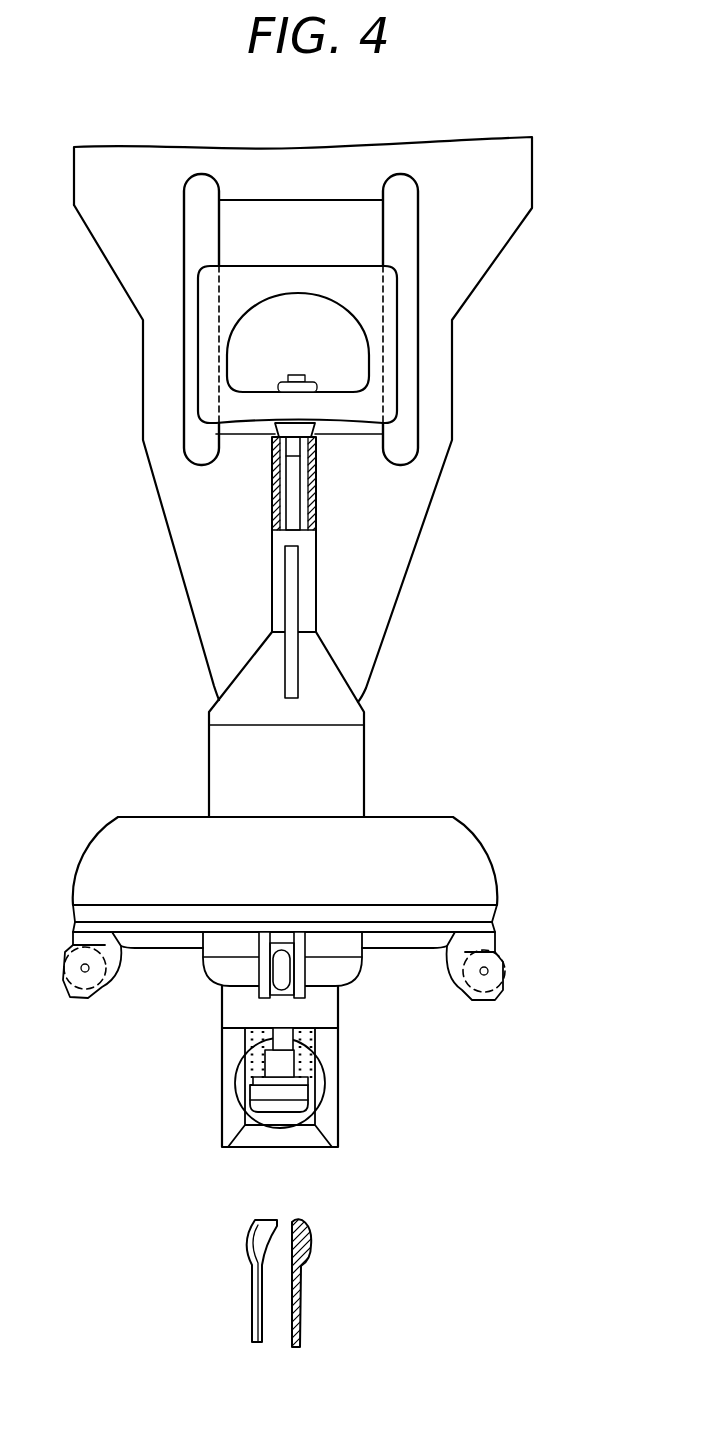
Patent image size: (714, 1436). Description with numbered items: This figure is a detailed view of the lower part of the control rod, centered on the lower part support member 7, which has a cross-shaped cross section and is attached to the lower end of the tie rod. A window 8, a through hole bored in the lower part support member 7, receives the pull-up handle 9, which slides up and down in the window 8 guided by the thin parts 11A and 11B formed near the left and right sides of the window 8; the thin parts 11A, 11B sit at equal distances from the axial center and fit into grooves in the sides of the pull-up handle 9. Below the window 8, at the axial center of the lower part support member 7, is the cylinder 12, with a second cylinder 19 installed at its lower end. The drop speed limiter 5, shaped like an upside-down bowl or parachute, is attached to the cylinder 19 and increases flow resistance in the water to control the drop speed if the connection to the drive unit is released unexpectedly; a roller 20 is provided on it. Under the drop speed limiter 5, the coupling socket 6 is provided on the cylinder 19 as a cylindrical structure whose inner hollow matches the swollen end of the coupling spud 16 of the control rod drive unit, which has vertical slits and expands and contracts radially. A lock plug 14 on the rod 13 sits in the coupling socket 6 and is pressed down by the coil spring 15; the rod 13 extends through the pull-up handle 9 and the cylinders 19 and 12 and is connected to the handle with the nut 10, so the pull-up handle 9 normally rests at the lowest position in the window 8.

The drop speed limiter 5 is at (465, 862).
The coupling socket 6 is at (338, 1080).
The lower part support member 7 is at (508, 198).
The window 8 is at (270, 230).
The pull-up handle 9 is at (363, 303).
The nut 10 is at (310, 380).
The thin part 11A is at (193, 255).
The thin part 11B is at (402, 238).
The cylinder 12 is at (316, 485).
The rod 13 is at (300, 523).
The lock plug 14 is at (295, 1098).
The coil spring 15 is at (310, 1072).
The coupling spud 16 is at (310, 1243).
The cylinder 19 is at (338, 770).
The roller 20 is at (503, 962).